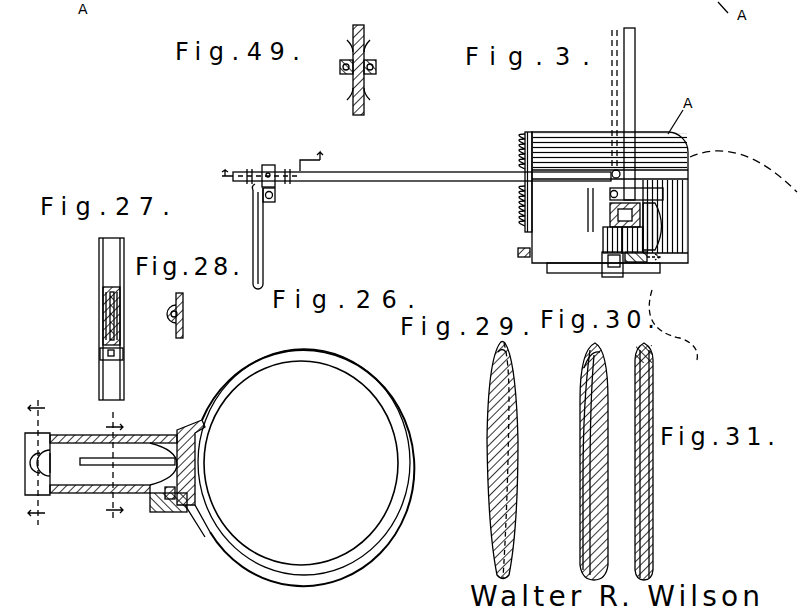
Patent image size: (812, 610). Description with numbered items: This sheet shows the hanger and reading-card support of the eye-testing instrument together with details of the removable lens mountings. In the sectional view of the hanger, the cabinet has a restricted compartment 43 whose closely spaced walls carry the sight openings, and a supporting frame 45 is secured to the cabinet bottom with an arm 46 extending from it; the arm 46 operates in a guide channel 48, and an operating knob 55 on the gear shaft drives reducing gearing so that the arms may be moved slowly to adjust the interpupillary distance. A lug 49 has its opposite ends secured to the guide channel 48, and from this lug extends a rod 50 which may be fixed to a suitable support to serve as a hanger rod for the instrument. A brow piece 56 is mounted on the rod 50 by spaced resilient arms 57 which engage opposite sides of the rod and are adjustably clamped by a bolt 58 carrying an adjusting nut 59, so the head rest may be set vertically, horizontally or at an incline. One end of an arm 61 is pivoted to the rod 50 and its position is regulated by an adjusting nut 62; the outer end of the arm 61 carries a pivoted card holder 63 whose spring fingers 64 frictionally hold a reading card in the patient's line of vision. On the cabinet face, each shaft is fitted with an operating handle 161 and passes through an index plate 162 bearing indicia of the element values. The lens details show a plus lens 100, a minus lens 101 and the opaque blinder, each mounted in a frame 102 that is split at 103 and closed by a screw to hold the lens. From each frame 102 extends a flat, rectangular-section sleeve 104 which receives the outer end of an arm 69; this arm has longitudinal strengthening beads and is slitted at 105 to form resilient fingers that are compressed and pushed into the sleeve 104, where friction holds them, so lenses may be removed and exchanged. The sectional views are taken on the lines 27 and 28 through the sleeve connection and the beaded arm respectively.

In FIG. 3, the restricted compartment 43 is at (663, 240).
In FIG. 3, the supporting frame 45 is at (572, 273).
In FIG. 3, the arm 46 is at (618, 278).
In FIG. 3, the guide channel 48 is at (650, 264).
In FIG. 3, the lug 49 is at (588, 240).
In FIG. 3, the rod 50 is at (636, 72).
In FIG. 3, the operating knob 55 is at (560, 265).
In FIG. 3, the brow piece 56 is at (663, 194).
In FIG. 3, the resilient arm 57 is at (590, 207).
In FIG. 3, the bolt 58 is at (612, 208).
In FIG. 3, the adjusting nut 59 is at (605, 190).
In FIG. 49, the arm 61 is at (364, 30).
In FIG. 3, the arm 61 is at (398, 171).
In FIG. 3, the adjusting nut 62 is at (614, 170).
In FIG. 3, the card holder 63 is at (276, 216).
In FIG. 3, the spring finger 64 is at (253, 212).
In FIG. 27, the arm 69 is at (106, 322).
In FIG. 28, the arm 69 is at (184, 330).
In FIG. 26, the arm 69 is at (45, 495).
In FIG. 29, the plus lens 100 is at (492, 438).
In FIG. 30, the minus lens 101 is at (590, 440).
In FIG. 27, the frame 102 is at (112, 381).
In FIG. 26, the frame 102 is at (380, 392).
In FIG. 29, the frame 102 is at (498, 350).
In FIG. 30, the frame 102 is at (585, 352).
In FIG. 31, the frame 102 is at (653, 358).
In FIG. 27, the split 103 is at (122, 354).
In FIG. 26, the split 103 is at (188, 512).
In FIG. 27, the sleeve 104 is at (103, 313).
In FIG. 26, the sleeve 104 is at (175, 435).
In FIG. 27, the slit 105 is at (124, 308).
In FIG. 26, the slit 105 is at (135, 470).
In FIG. 3, the operating handle 161 is at (518, 215).
In FIG. 3, the index plate 162 is at (522, 138).
In FIG. 26, the section line 27 is at (113, 468).
In FIG. 26, the section line 28 is at (39, 464).